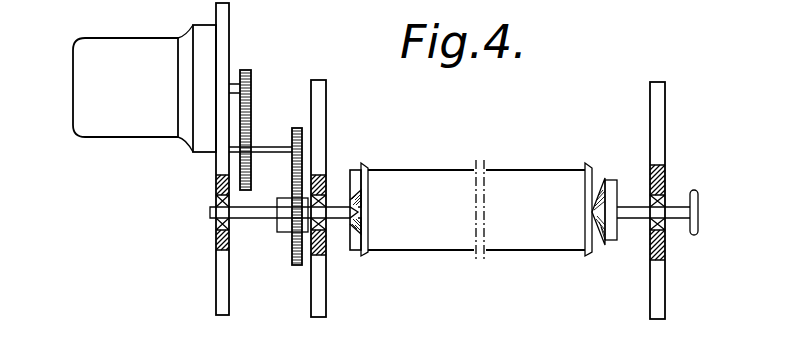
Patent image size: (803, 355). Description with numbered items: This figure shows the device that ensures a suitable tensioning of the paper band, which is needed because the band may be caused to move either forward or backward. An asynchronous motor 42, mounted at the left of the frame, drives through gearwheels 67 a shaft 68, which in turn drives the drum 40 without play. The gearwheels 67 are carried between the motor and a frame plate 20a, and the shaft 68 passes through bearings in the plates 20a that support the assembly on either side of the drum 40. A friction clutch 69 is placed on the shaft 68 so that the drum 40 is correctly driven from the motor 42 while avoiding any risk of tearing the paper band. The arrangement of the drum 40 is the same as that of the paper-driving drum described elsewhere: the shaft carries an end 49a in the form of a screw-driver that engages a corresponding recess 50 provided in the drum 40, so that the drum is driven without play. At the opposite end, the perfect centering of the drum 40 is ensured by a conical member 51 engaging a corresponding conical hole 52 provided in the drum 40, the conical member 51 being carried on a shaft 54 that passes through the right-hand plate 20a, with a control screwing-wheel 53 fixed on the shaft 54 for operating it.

The asynchronous motor 42 is at (120, 120).
The gearwheels 67 is at (290, 162).
The frame plates 20a is at (657, 131).
The shaft 68 is at (332, 215).
The friction clutch 69 is at (288, 247).
The recess 50 is at (355, 205).
The shaft end in the form of a screw-driver 49a is at (357, 213).
The drum 40 is at (432, 178).
The conical hole 52 is at (600, 240).
The conical member 51 is at (609, 205).
The shaft 54 is at (672, 222).
The control screwing-wheel 53 is at (694, 194).